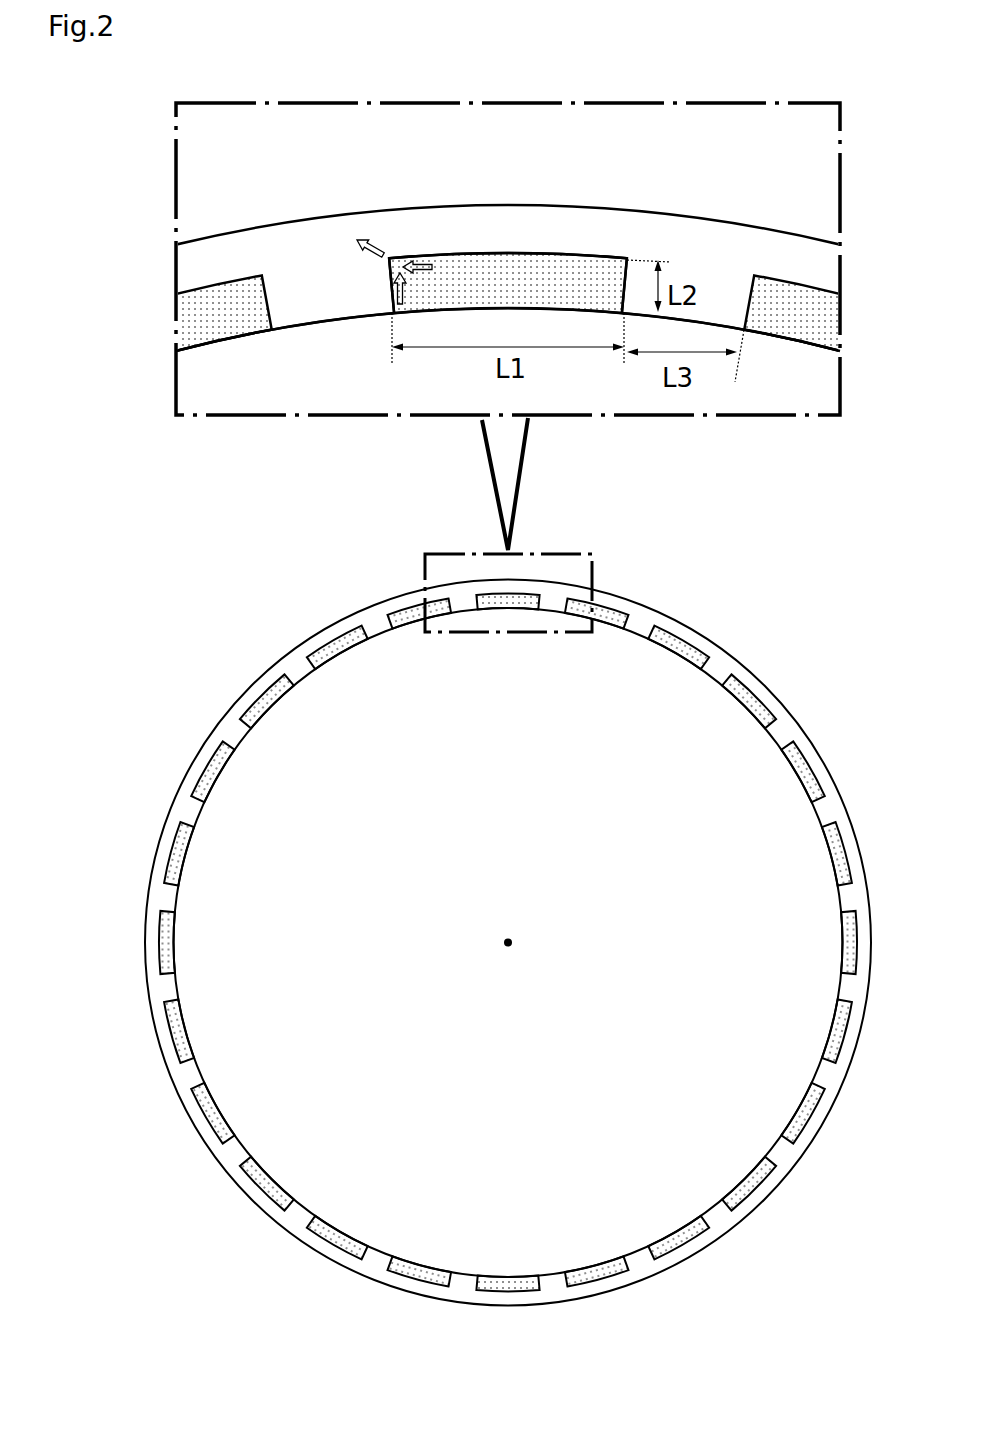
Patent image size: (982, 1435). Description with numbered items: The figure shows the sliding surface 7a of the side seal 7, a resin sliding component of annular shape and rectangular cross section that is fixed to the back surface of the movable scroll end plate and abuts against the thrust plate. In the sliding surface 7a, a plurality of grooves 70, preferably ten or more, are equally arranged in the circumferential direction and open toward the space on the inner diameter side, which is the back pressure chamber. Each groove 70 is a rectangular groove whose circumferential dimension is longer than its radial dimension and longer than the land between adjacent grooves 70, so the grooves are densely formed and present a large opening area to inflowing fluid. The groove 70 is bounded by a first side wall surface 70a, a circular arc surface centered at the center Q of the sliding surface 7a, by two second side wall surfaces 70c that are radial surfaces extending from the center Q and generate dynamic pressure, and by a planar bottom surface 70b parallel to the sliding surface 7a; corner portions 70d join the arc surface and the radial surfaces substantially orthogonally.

The side seal 7 is at (738, 599).
The sliding surface 7a is at (788, 721).
The groove 70 is at (508, 612).
The first side wall surface 70a is at (481, 265).
The bottom surface 70b is at (536, 283).
The second side wall surface 70c is at (392, 311).
The corner portion 70d is at (389, 258).
The center of the sliding surface Q is at (512, 935).